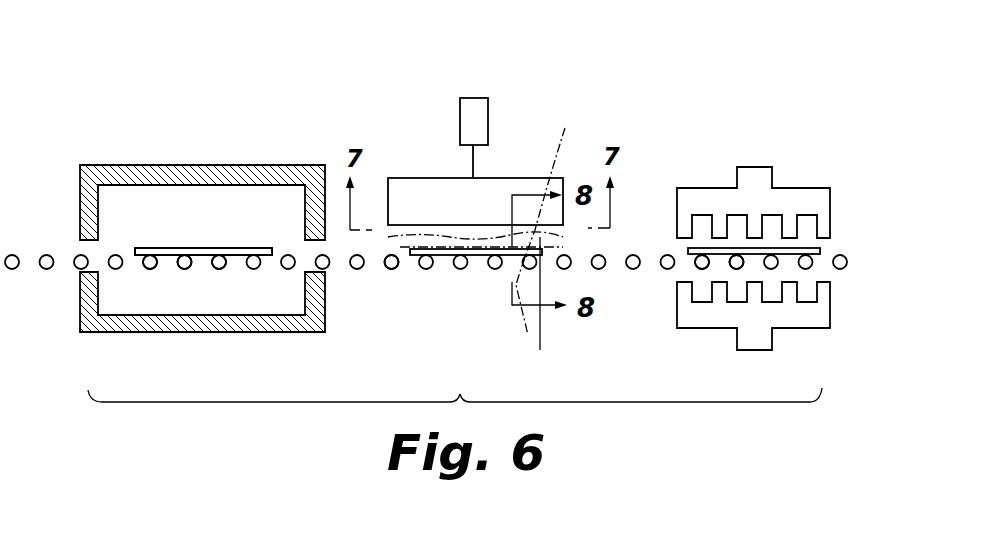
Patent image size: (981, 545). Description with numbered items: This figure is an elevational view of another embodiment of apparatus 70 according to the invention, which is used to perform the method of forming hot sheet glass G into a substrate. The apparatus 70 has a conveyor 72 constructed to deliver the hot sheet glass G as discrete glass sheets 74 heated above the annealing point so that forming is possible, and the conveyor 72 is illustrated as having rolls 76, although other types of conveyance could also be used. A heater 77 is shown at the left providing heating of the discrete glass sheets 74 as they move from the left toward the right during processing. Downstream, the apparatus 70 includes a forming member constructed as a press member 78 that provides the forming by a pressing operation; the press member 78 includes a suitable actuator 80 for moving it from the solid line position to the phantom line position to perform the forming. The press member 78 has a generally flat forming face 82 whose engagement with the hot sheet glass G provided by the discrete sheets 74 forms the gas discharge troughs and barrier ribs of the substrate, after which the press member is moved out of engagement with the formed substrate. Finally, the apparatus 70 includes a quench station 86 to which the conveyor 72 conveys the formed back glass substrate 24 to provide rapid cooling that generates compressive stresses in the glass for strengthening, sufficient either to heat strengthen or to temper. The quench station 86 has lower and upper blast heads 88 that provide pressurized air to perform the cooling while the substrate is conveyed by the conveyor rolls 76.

The formed back glass substrate 24 is at (790, 248).
The apparatus 70 is at (394, 124).
The conveyor 72 is at (364, 283).
The discrete glass sheets 74 is at (177, 248).
The rolls 76 is at (150, 270).
The heater 77 is at (112, 156).
The press member 78 is at (541, 168).
The actuator 80 is at (488, 128).
The forming face 82 is at (530, 311).
The quench station 86 is at (783, 224).
The blast heads 88 is at (802, 190).
The hot sheet glass G is at (248, 248).